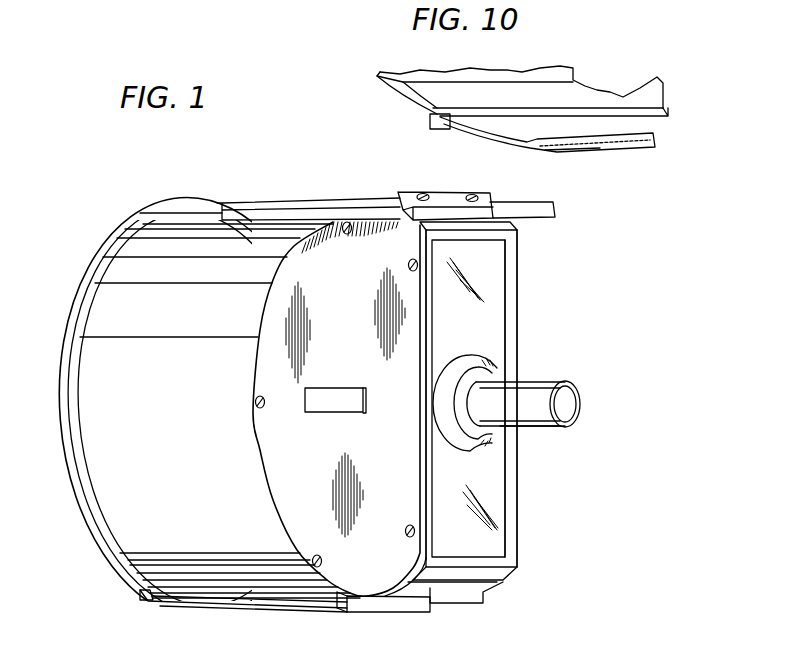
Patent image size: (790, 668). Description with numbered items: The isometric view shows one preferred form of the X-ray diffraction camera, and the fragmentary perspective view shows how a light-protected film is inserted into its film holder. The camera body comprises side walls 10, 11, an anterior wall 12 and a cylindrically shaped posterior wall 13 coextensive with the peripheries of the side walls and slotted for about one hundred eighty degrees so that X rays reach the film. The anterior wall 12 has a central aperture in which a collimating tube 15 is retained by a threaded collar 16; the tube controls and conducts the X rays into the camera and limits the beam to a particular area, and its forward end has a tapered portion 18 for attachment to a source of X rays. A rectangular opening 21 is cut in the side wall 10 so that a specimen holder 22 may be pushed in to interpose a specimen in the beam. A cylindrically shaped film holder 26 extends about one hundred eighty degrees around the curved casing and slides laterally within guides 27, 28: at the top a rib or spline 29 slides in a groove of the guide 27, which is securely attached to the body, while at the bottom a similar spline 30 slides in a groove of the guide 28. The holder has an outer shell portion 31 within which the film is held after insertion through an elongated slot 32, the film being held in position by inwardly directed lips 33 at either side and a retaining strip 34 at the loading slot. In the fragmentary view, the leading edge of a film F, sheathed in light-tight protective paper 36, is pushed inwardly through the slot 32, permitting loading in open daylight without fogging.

In FIG. 1, the side wall 10 is at (378, 578).
In FIG. 1, the side wall 11 is at (510, 503).
In FIG. 1, the anterior wall 12 is at (488, 323).
In FIG. 1, the posterior wall 13 is at (485, 578).
In FIG. 1, the collimating tube 15 is at (543, 430).
In FIG. 1, the threaded collar 16 is at (457, 432).
In FIG. 1, the tapered portion 18 is at (563, 402).
In FIG. 1, the rectangular opening 21 is at (360, 414).
In FIG. 1, the specimen holder 22 is at (337, 413).
In FIG. 1, the film holder 26 is at (56, 467).
In FIG. 10, the film holder 26 is at (391, 118).
In FIG. 1, the guide 27 is at (443, 205).
In FIG. 1, the guide 28 is at (402, 604).
In FIG. 1, the rib or spline 29 is at (245, 208).
In FIG. 1, the spline 30 is at (153, 602).
In FIG. 10, the spline 30 is at (430, 128).
In FIG. 1, the outer shell portion 31 is at (120, 532).
In FIG. 10, the outer shell portion 31 is at (630, 75).
In FIG. 1, the elongated slot 32 is at (228, 592).
In FIG. 10, the elongated slot 32 is at (668, 117).
In FIG. 1, the inwardly directed lips 33 is at (86, 490).
In FIG. 10, the inwardly directed lips 33 is at (407, 88).
In FIG. 1, the retaining strip 34 is at (240, 585).
In FIG. 10, the retaining strip 34 is at (643, 107).
In FIG. 10, the light-tight protective paper 36 is at (613, 128).
In FIG. 10, the film F is at (577, 143).